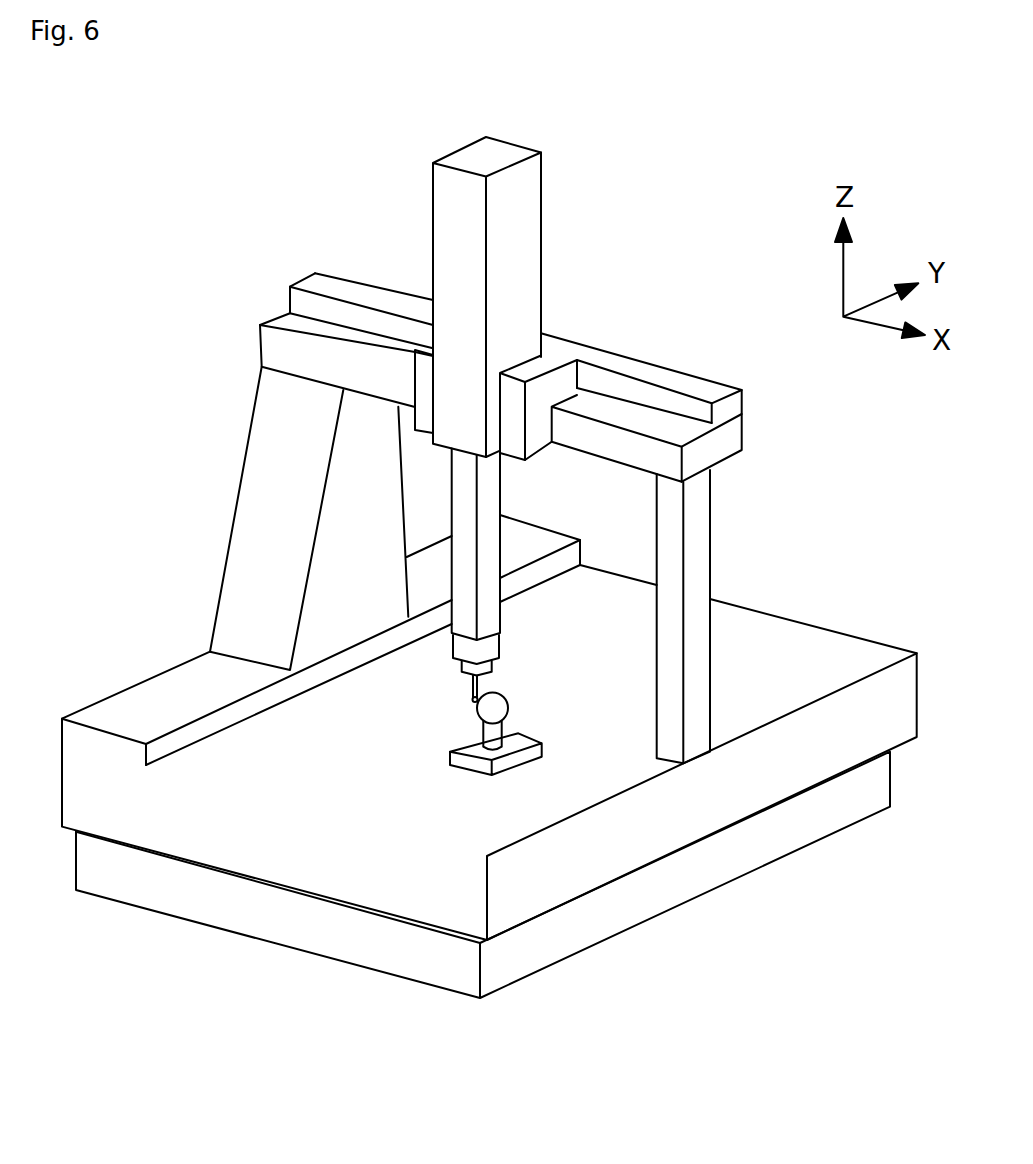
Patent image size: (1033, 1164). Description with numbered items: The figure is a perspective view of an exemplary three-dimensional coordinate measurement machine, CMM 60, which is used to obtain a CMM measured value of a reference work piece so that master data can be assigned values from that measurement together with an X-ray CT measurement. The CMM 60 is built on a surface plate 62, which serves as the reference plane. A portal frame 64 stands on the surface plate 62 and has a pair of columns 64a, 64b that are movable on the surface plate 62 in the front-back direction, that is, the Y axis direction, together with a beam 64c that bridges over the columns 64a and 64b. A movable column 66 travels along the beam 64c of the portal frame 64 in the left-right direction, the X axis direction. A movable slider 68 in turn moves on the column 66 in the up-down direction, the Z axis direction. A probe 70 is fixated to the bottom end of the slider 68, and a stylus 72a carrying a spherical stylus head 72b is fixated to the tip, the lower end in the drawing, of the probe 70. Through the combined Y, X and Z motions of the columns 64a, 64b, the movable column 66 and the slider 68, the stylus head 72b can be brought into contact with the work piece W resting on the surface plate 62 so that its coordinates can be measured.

The CMM 60 is at (280, 173).
The surface plate 62 is at (857, 653).
The portal frame 64 is at (218, 310).
The column 64a is at (702, 530).
The column 64b is at (261, 455).
The beam 64c is at (743, 440).
The movable column 66 is at (553, 358).
The movable slider 68 is at (507, 499).
The probe 70 is at (515, 648).
The stylus 72a is at (472, 690).
The stylus head 72b is at (469, 709).
The workpiece W is at (510, 705).